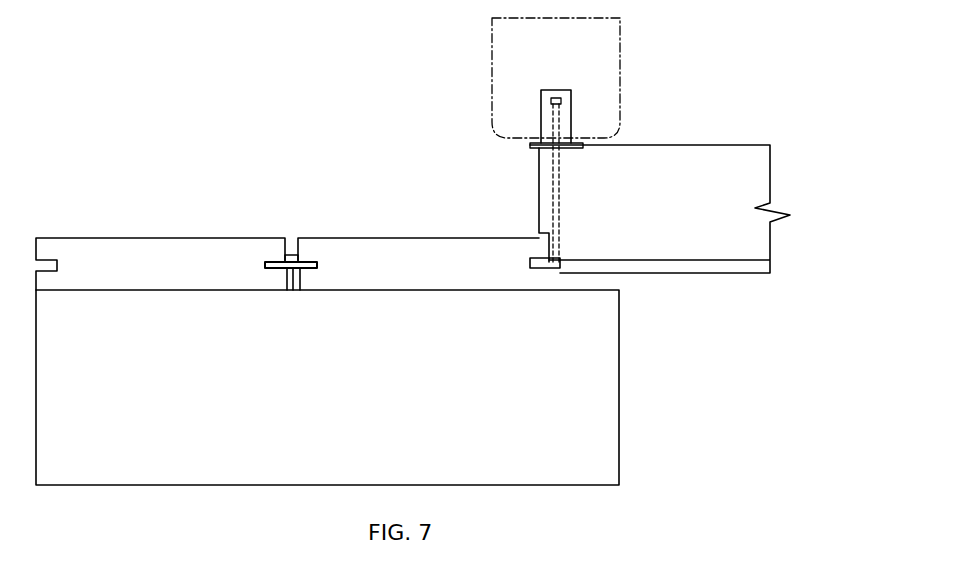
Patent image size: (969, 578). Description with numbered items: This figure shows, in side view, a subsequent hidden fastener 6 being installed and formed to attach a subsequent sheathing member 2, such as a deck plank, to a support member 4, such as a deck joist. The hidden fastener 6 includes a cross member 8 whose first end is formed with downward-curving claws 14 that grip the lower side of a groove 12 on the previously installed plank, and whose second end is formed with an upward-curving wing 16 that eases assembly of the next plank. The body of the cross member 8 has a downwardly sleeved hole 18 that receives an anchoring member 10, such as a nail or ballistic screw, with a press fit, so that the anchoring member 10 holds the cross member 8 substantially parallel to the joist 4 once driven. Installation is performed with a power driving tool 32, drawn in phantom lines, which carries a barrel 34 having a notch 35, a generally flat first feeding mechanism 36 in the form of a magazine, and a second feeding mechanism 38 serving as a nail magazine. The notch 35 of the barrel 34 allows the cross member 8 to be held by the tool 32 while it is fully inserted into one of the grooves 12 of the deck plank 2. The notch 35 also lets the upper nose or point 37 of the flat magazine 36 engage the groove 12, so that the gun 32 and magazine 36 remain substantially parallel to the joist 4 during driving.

The sheathing member 2 is at (171, 276).
The support member 4 is at (336, 399).
The hidden fastener 6 is at (300, 222).
The cross member 8 is at (307, 262).
The anchoring member 10 is at (293, 238).
The groove 12 is at (270, 263).
The claws 14 is at (280, 270).
The wing 16 is at (306, 270).
The hole 18 is at (292, 270).
The power driving tool 32 is at (468, 54).
The barrel 34 is at (551, 125).
The notch 35 is at (539, 235).
The first feeding mechanism 36 is at (684, 273).
The point 37 is at (552, 270).
The second feeding mechanism 38 is at (681, 201).